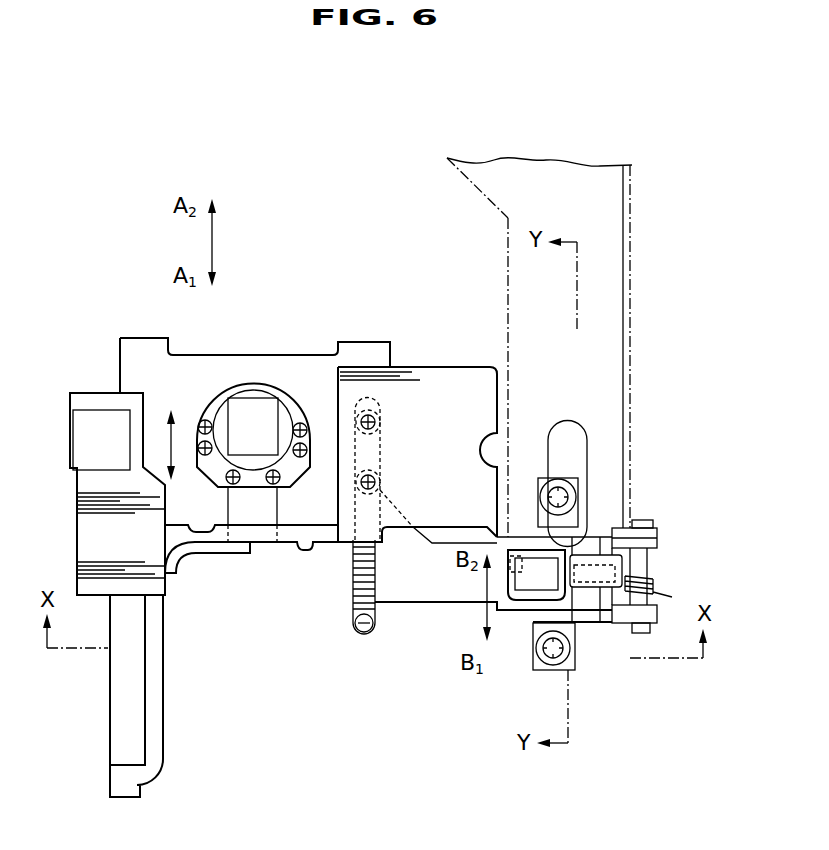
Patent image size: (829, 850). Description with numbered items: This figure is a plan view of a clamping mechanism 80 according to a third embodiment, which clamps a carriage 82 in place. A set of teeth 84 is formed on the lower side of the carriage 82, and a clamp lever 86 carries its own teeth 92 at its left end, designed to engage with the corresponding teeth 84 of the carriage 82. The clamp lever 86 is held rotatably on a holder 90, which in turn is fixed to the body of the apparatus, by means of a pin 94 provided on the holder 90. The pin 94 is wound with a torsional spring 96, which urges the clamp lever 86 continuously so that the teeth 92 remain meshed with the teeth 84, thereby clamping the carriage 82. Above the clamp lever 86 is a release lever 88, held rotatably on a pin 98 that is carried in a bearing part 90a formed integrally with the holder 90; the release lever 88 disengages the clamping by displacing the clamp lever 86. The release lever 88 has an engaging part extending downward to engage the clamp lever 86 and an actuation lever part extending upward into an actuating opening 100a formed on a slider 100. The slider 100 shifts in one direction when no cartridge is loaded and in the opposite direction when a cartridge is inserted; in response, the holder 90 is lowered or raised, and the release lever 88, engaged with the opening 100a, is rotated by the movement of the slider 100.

The clamping mechanism 80 is at (520, 129).
The carriage 82 is at (310, 368).
The teeth 84 is at (372, 438).
The clamp lever 86 is at (415, 607).
The release lever 88 is at (505, 552).
The holder 90 is at (538, 632).
The bearing part 90a is at (592, 600).
The teeth 92 is at (350, 580).
The pin 94 is at (652, 565).
The torsional spring 96 is at (655, 585).
The pin 98 is at (507, 578).
The slider 100 is at (522, 347).
The actuating opening 100a is at (523, 537).